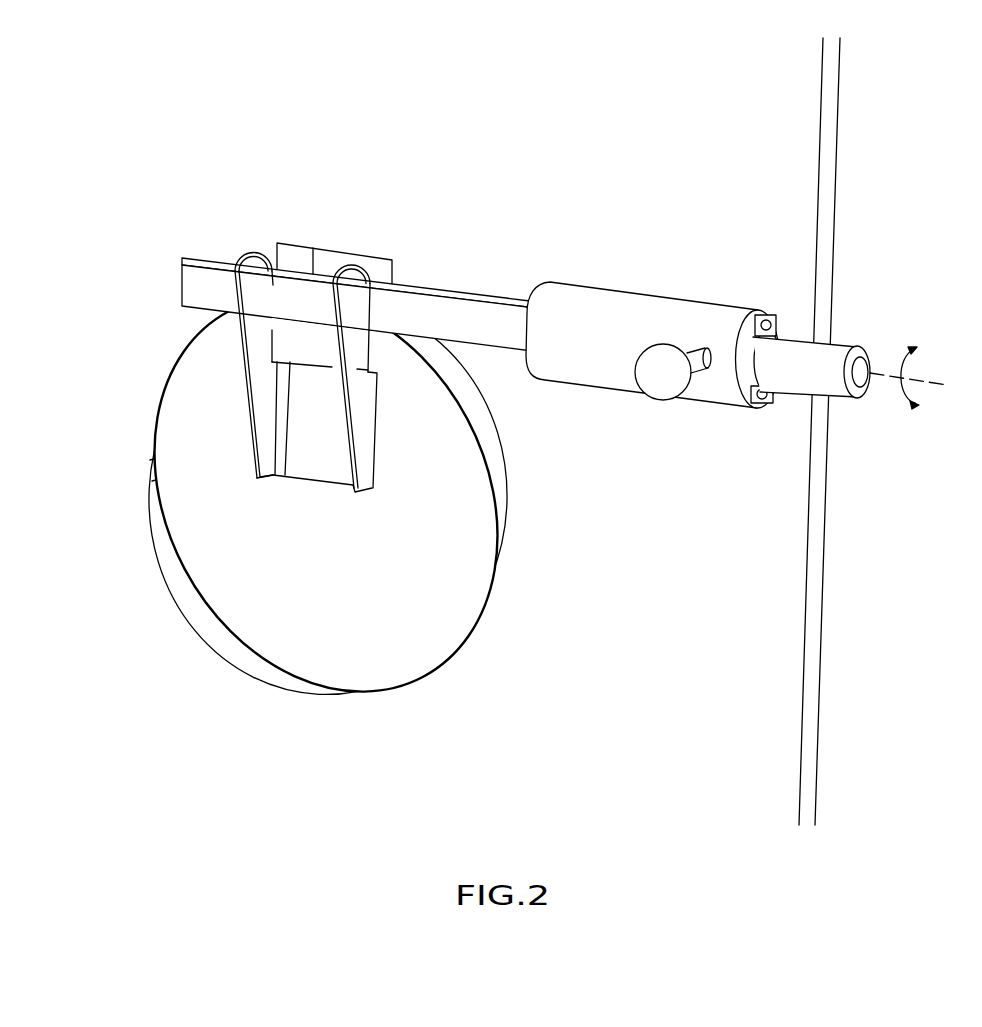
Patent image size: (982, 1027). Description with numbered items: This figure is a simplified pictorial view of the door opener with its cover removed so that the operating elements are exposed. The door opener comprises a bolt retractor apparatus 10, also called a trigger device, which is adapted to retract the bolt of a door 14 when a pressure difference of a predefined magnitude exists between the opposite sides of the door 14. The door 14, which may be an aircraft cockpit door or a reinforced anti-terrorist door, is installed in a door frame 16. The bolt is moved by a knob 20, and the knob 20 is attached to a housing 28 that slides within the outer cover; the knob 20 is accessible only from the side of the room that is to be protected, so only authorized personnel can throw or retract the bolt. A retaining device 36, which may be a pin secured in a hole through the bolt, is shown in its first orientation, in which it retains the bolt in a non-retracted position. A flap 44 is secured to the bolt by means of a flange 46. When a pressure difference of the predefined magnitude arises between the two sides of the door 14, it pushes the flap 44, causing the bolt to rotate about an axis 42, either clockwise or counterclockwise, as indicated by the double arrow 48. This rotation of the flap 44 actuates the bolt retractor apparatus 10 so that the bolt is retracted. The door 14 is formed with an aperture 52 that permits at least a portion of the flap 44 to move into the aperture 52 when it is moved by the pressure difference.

The bolt retractor apparatus 10 is at (439, 418).
The door 14 is at (772, 177).
The door frame 16 is at (927, 177).
The knob 20 is at (640, 396).
The housing 28 is at (653, 316).
The retaining device 36 is at (779, 324).
The axis 42 is at (851, 410).
The flap 44 is at (337, 494).
The flange 46 is at (439, 411).
The double arrow 48 is at (903, 346).
The aperture 52 is at (328, 497).